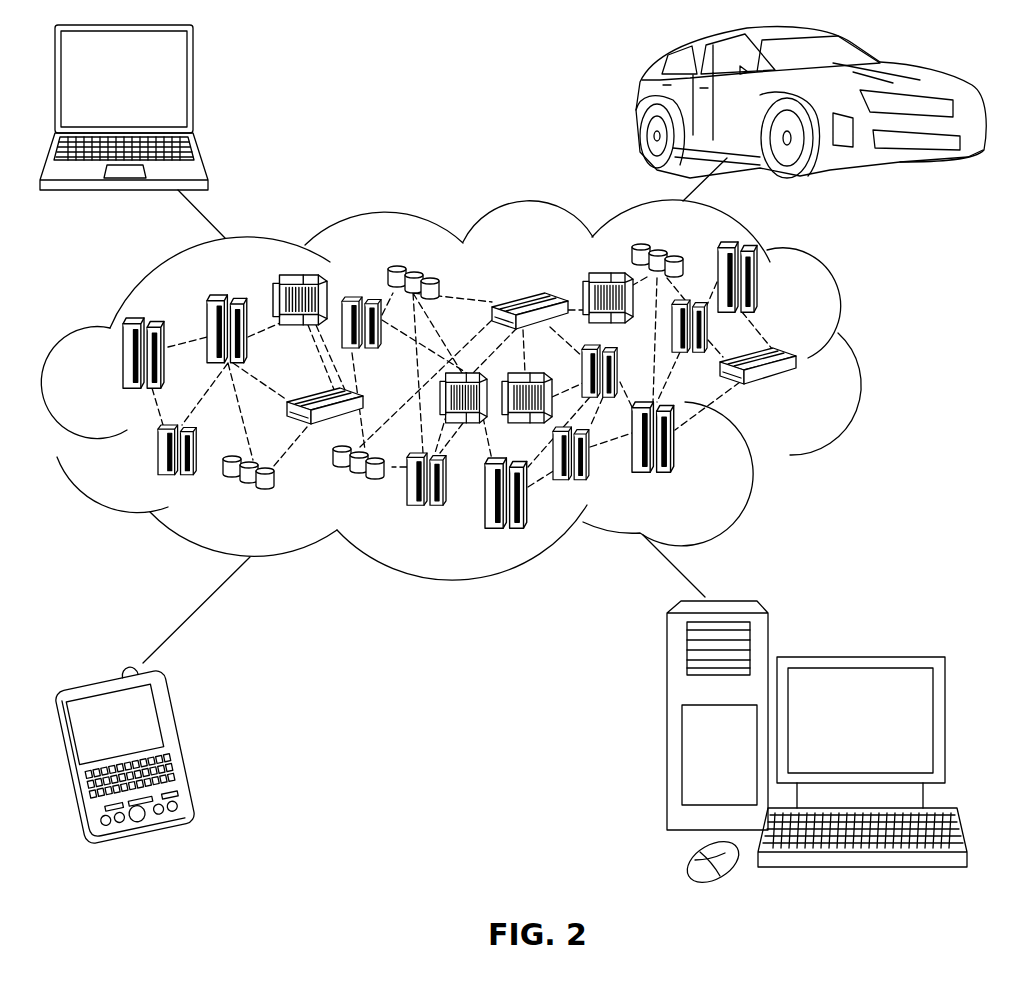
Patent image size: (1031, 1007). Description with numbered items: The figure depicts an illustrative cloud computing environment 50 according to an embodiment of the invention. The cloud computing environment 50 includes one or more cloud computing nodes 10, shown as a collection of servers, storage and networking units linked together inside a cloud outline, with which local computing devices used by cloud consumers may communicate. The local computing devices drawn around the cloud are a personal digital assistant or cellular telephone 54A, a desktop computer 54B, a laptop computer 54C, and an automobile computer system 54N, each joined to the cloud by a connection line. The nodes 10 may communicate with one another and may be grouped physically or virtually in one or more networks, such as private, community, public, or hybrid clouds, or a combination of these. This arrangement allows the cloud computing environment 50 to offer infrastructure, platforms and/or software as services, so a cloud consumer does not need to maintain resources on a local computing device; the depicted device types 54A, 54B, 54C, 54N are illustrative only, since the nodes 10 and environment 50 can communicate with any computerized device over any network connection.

The cloud computing nodes 10 is at (800, 394).
The cloud computing environment 50 is at (858, 363).
The personal digital assistant (PDA) or cellular telephone 54A is at (193, 752).
The desktop computer 54B is at (858, 656).
The laptop computer 54C is at (195, 85).
The automobile computer system 54N is at (632, 101).